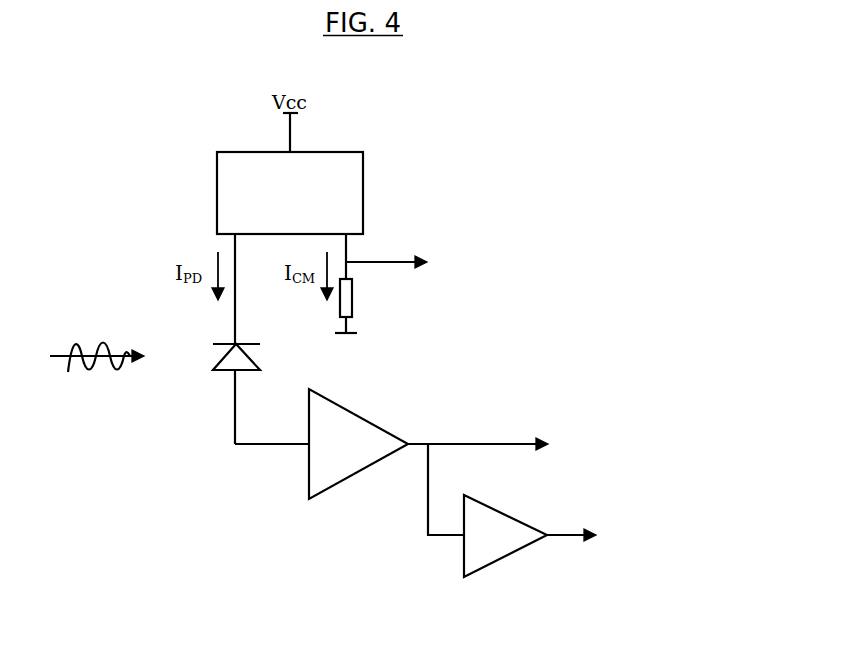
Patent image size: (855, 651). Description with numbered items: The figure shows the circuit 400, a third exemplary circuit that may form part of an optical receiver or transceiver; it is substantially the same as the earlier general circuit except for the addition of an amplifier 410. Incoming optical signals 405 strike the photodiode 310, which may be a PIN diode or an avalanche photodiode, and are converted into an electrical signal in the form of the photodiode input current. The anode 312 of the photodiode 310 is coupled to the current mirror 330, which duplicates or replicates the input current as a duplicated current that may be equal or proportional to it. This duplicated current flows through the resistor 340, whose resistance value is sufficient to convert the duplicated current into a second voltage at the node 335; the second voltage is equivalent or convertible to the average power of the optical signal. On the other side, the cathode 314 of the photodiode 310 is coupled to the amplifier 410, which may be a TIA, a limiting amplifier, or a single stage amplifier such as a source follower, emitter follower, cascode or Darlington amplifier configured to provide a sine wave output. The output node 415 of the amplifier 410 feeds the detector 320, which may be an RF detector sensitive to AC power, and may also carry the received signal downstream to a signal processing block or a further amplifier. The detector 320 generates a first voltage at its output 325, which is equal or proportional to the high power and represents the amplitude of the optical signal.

The circuit 400 is at (508, 98).
The current mirror 330 is at (217, 183).
The node 335 is at (399, 257).
The resistor 340 is at (354, 311).
The photodiode 310 is at (259, 358).
The anode 312 is at (240, 342).
The cathode 314 is at (229, 376).
The incoming optical signals 405 is at (98, 337).
The amplifier 410 is at (308, 485).
The output node 415 is at (508, 440).
The detector 320 is at (462, 562).
The output 325 is at (572, 542).